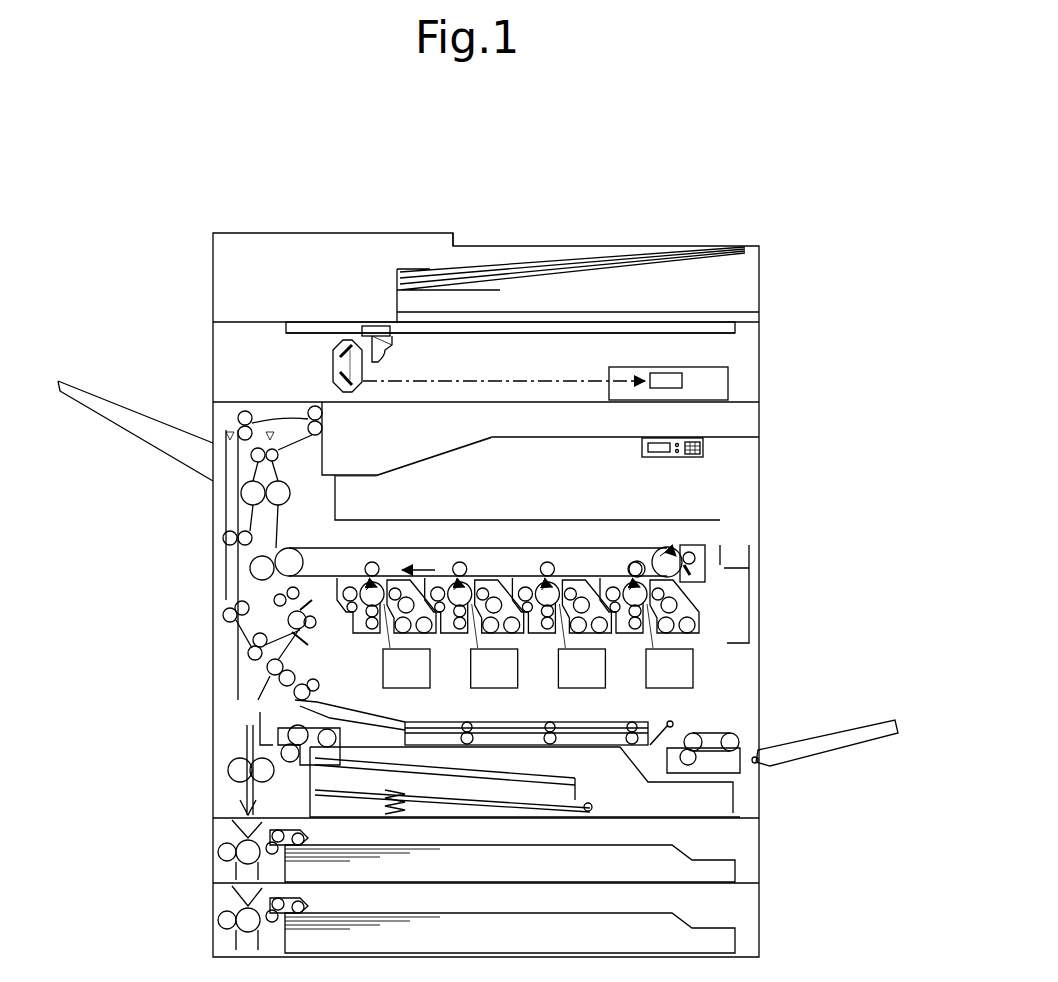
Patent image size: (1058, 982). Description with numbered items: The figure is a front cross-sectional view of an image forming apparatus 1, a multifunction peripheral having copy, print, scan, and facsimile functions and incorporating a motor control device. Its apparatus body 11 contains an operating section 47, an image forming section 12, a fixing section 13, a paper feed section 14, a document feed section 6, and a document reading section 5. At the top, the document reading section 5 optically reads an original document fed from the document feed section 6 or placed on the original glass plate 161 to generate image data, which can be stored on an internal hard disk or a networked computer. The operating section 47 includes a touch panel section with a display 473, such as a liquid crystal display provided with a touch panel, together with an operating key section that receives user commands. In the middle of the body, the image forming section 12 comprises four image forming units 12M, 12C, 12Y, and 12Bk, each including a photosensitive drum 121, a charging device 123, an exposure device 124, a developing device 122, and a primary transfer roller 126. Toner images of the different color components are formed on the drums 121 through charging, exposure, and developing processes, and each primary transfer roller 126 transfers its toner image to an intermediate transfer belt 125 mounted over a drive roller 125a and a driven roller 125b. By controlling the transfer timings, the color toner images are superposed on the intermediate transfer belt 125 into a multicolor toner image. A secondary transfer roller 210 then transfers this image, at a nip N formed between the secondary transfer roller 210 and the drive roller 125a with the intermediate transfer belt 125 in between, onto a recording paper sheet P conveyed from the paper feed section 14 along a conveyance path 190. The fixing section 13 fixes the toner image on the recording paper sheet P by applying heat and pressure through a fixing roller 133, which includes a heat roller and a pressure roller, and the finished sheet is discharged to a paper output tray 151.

The image forming apparatus 1 is at (835, 305).
The document reading section 5 is at (190, 358).
The document feed section 6 is at (606, 232).
The apparatus body 11 is at (763, 460).
The image forming section 12 is at (722, 580).
The image forming unit 12Bk is at (380, 560).
The image forming unit 12Y is at (458, 560).
The image forming unit 12C is at (562, 560).
The image forming unit 12M is at (636, 550).
The fixing section 13 is at (238, 496).
The paper feed section 14 is at (737, 845).
The operating section 47 is at (705, 450).
The photosensitive drum 121 is at (640, 635).
The developing device 122 is at (700, 618).
The charging device 123 is at (620, 630).
The exposure device 124 is at (695, 672).
The intermediate transfer belt 125 is at (655, 548).
The drive roller 125a is at (290, 552).
The driven roller 125b is at (680, 547).
The primary transfer roller 126 is at (626, 566).
The fixing roller 133 is at (244, 492).
The paper output tray 151 is at (362, 470).
The original glass plate 161 is at (623, 328).
The conveyance path 190 is at (253, 550).
The secondary transfer roller 210 is at (247, 570).
The display 473 is at (670, 440).
The nip N is at (248, 545).
The recording paper sheet P is at (565, 762).